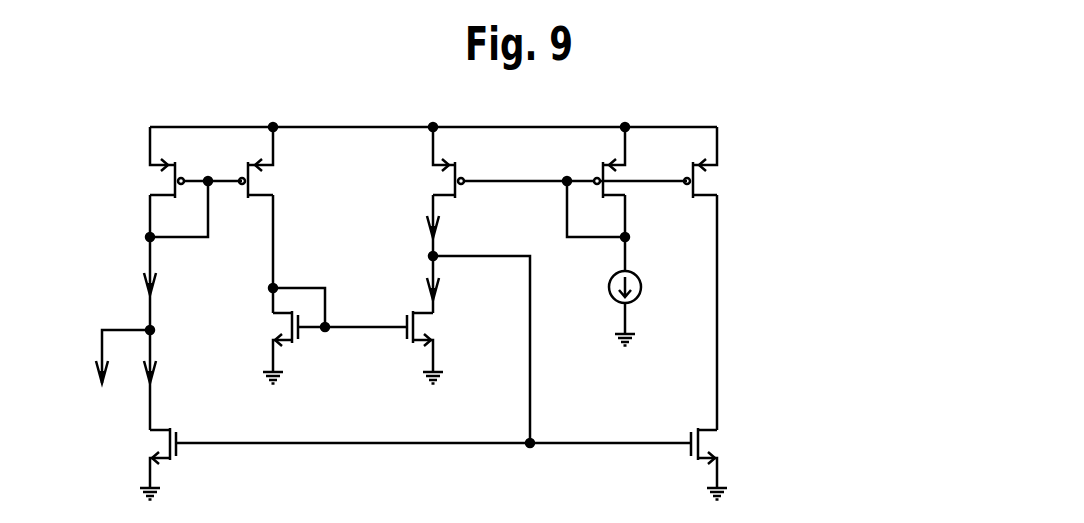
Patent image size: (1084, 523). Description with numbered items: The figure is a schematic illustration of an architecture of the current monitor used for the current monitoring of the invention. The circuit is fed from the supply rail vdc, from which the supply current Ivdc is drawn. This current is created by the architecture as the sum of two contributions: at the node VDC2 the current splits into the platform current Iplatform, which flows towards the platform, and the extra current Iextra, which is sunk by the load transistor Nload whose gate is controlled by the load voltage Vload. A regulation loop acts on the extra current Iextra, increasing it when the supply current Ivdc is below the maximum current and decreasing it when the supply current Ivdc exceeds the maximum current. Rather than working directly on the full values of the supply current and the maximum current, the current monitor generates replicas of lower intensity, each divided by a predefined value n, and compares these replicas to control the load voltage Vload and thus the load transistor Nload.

The supply voltage rail vdc is at (433, 114).
The supply current Ivdc is at (175, 262).
The second supply voltage node VDC2 is at (76, 284).
The platform current Iplatform is at (90, 343).
The extra current Iextra is at (184, 380).
The load transistor Nload is at (126, 464).
The load voltage Vload is at (433, 430).